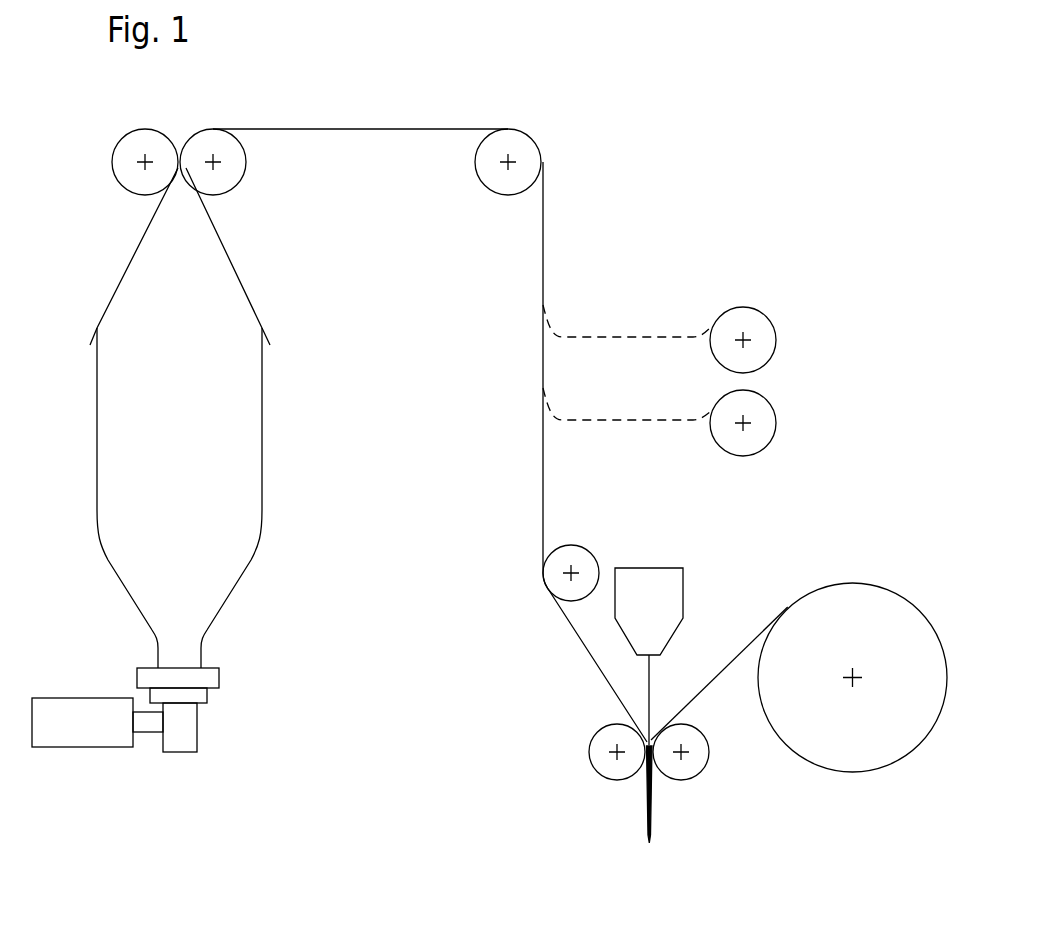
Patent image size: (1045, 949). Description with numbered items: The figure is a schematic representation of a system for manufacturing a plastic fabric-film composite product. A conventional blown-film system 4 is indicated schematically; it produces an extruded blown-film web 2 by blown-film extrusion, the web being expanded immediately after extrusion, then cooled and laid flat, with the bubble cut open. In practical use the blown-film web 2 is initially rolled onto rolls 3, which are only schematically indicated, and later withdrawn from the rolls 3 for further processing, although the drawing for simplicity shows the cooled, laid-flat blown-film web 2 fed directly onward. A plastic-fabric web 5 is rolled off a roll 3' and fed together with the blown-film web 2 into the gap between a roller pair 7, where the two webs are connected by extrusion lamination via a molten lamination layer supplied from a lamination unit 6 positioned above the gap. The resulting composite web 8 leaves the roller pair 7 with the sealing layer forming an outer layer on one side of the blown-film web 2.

The blown-film web 2 is at (353, 129).
The rolls 3 is at (693, 380).
The roll 3' is at (852, 710).
The blown-film system 4 is at (182, 752).
The plastic-fabric web 5 is at (732, 650).
The hopper / feed device 6 is at (652, 685).
The roller pair 7 is at (593, 767).
The composite web 8 is at (642, 812).